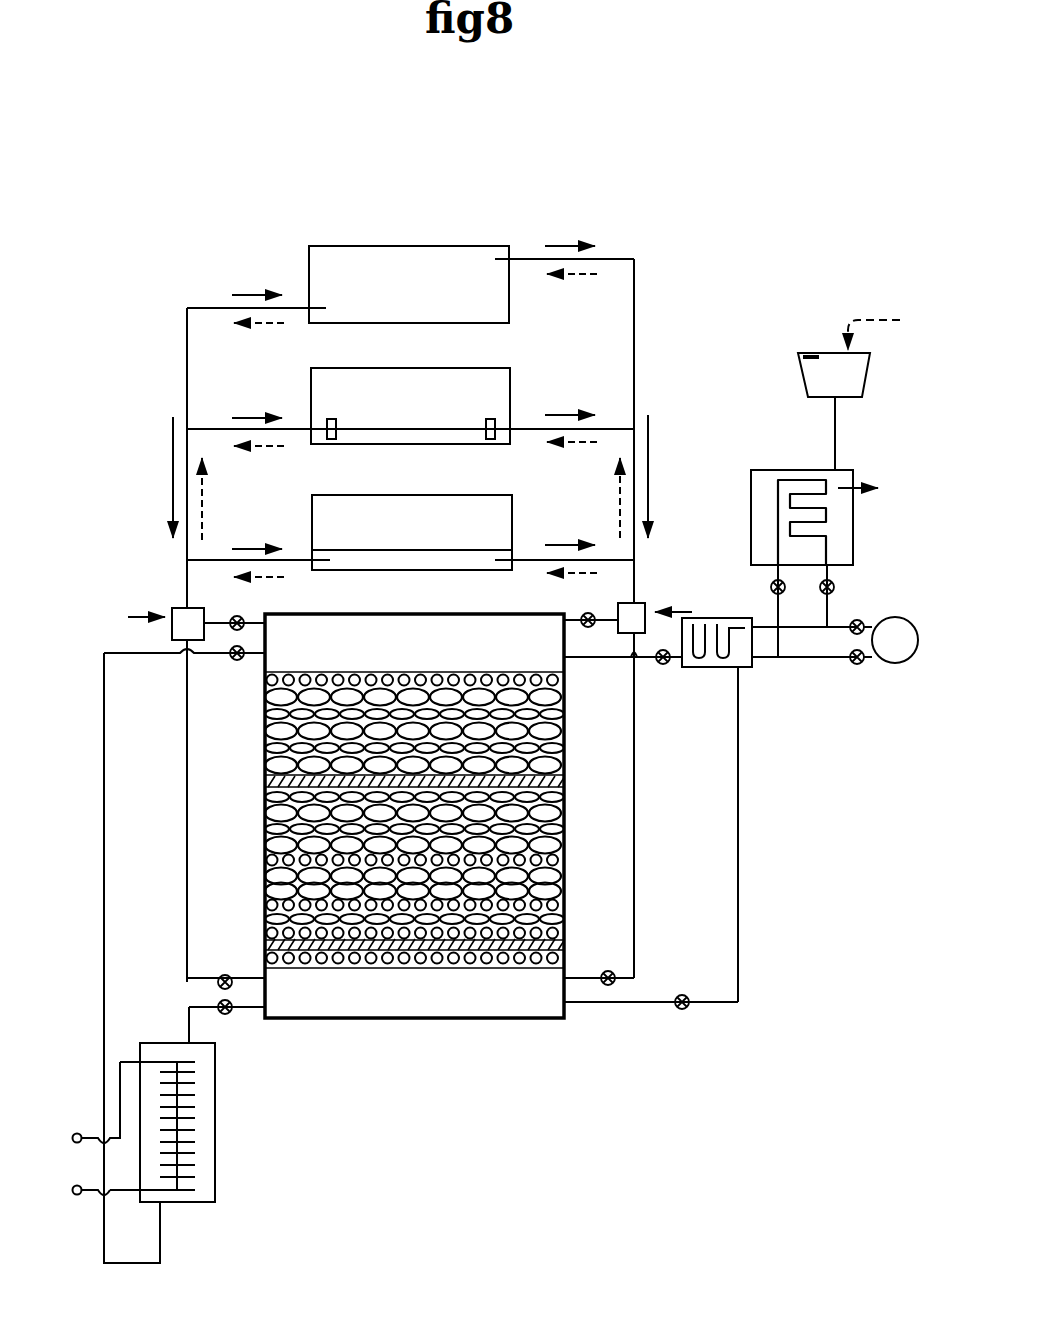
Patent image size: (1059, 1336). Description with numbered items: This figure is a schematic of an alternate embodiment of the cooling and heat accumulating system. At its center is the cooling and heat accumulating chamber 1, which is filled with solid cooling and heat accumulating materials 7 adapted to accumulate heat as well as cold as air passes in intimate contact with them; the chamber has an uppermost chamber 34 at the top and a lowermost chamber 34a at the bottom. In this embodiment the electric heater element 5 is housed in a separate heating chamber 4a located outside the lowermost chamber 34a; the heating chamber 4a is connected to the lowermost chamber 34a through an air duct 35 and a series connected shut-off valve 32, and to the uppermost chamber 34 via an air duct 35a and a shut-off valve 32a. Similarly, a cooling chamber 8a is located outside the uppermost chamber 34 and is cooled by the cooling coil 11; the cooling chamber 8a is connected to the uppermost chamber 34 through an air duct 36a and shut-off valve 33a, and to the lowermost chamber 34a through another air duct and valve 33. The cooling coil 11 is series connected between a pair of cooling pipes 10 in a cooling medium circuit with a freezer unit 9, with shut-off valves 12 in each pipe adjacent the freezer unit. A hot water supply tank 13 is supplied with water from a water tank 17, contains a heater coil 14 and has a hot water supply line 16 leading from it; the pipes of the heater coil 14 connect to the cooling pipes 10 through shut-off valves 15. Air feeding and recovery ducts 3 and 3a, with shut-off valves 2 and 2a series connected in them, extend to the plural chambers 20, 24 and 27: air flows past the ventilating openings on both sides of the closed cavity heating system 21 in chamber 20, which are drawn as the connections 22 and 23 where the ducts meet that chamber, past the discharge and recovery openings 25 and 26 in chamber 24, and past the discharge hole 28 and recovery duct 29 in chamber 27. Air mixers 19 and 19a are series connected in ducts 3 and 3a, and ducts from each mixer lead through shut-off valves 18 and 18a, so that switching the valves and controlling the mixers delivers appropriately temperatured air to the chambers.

The cooling and heat accumulating chamber 1 is at (578, 862).
The air shut-off valve 2 is at (608, 970).
The air shut-off valve 2a is at (226, 975).
The air feeding and recovery duct 3 is at (634, 375).
The air feeding and recovery duct 3a is at (187, 388).
The heating chamber 4a is at (215, 1177).
The electric heater element 5 is at (210, 1113).
The solid cooling and heat accumulating materials 7 is at (265, 815).
The cooling chamber 8a is at (703, 618).
The freezer unit 9 is at (895, 663).
The cooling pipes 10 is at (778, 660).
The cooling coil 11 is at (718, 625).
The shut-off valves 12 is at (852, 665).
The hot water supply tank 13 is at (862, 470).
The heater coil 14 is at (800, 480).
The shut-off valves 15 is at (785, 592).
The hot water supply line 16 is at (862, 490).
The water tank 17 is at (797, 347).
The shut-off valve 18 is at (590, 612).
The shut-off valve 18a is at (243, 615).
The air mixer 19 is at (638, 612).
The air mixer 19a is at (178, 608).
The chamber 20 is at (412, 532).
The closed cavity heating system 21 is at (385, 566).
The pipe connection 22 is at (490, 560).
The pipe connection 23 is at (333, 560).
The chamber 24 is at (410, 406).
The discharge opening 25 is at (495, 420).
The recovery opening 26 is at (327, 420).
The chamber 27 is at (409, 284).
The discharge hole 28 is at (330, 305).
The recovery duct 29 is at (485, 258).
The shut-off valve 32 is at (228, 1015).
The shut-off valve 32a is at (237, 660).
The valve 33 is at (682, 1010).
The shut-off valve 33a is at (663, 665).
The uppermost chamber 34 is at (414, 652).
The lowermost chamber 34a is at (414, 988).
The air duct 35 is at (189, 1020).
The air duct 35a is at (104, 793).
The air duct 36a is at (603, 662).